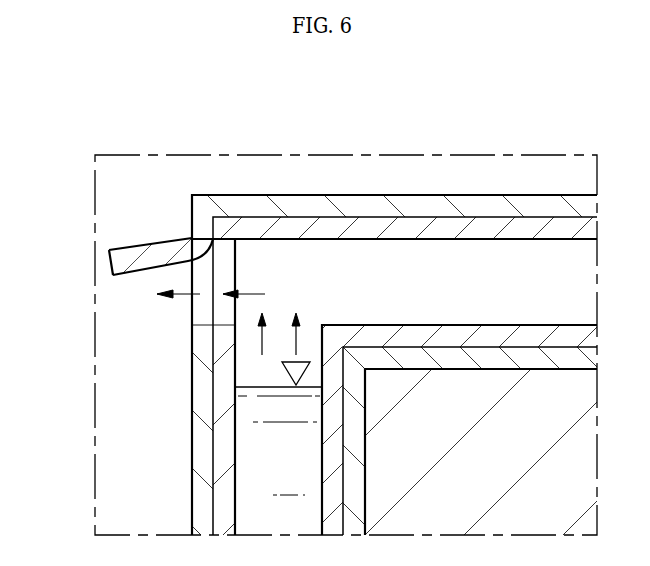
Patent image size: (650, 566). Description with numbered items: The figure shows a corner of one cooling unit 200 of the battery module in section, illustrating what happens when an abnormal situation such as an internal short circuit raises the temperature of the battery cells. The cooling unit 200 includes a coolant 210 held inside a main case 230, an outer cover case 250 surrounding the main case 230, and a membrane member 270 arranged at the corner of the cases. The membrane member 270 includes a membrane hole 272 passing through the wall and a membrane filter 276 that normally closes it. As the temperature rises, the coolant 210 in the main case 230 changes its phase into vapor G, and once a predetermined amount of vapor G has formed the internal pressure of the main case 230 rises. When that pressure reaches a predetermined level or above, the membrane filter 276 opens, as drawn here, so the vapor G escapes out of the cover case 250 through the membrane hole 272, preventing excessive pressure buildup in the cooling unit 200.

The cooling unit 200 is at (192, 136).
The coolant 210 is at (268, 460).
The main case 230 is at (477, 228).
The cover case 250 is at (410, 203).
The membrane member 270 is at (135, 245).
The membrane hole 272 is at (225, 262).
The membrane filter 276 is at (111, 259).
The vapor G is at (188, 297).